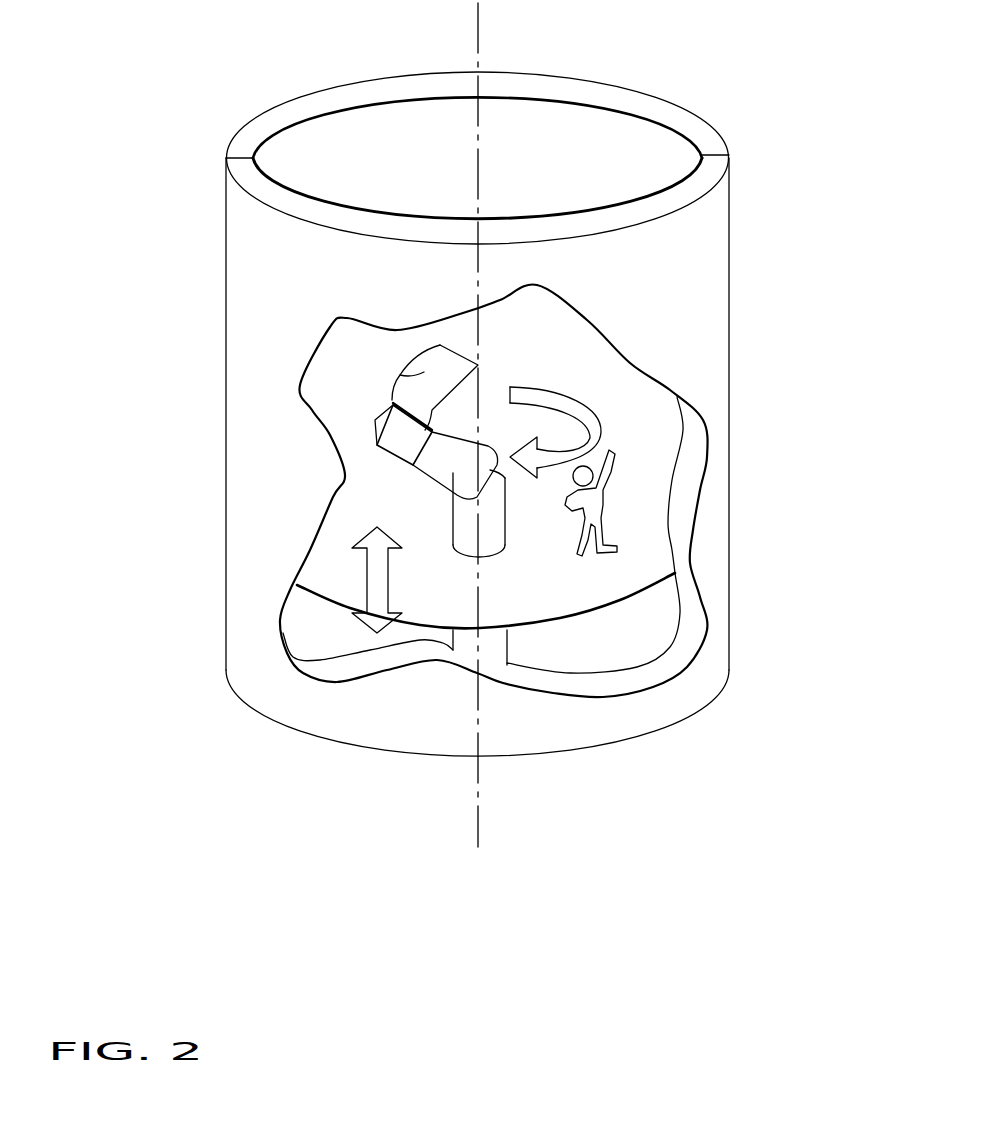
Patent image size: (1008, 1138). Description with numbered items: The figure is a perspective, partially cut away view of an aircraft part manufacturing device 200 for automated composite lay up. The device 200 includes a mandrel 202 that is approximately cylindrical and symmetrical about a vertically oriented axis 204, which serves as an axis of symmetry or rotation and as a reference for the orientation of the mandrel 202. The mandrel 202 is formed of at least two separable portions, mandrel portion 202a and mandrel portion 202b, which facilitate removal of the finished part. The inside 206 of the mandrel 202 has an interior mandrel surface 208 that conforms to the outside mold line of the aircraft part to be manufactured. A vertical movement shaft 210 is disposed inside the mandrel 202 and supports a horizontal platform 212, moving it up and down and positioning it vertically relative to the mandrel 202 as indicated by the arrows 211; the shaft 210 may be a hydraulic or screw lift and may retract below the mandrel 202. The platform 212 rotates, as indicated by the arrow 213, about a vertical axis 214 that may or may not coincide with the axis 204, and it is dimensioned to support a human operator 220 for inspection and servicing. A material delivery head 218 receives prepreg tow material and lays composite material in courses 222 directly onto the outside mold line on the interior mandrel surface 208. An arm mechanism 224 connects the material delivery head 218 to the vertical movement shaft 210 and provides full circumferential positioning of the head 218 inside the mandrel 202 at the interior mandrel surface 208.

The aircraft part manufacturing device 200 is at (358, 903).
The mandrel 202 is at (532, 398).
The mandrel portion 202a is at (682, 121).
The mandrel portion 202b is at (707, 181).
The axis 204 is at (483, 830).
The inside of mandrel 206 is at (372, 98).
The interior mandrel surface 208 is at (598, 127).
The vertical movement shaft 210 is at (505, 655).
The arrows 211 is at (365, 571).
The platform 212 is at (567, 606).
The arrow 213 is at (570, 397).
The vertical axis 214 is at (483, 805).
The material delivery head 218 is at (383, 422).
The human operator 220 is at (593, 510).
The courses 222 is at (422, 372).
The arm mechanism 224 is at (448, 467).